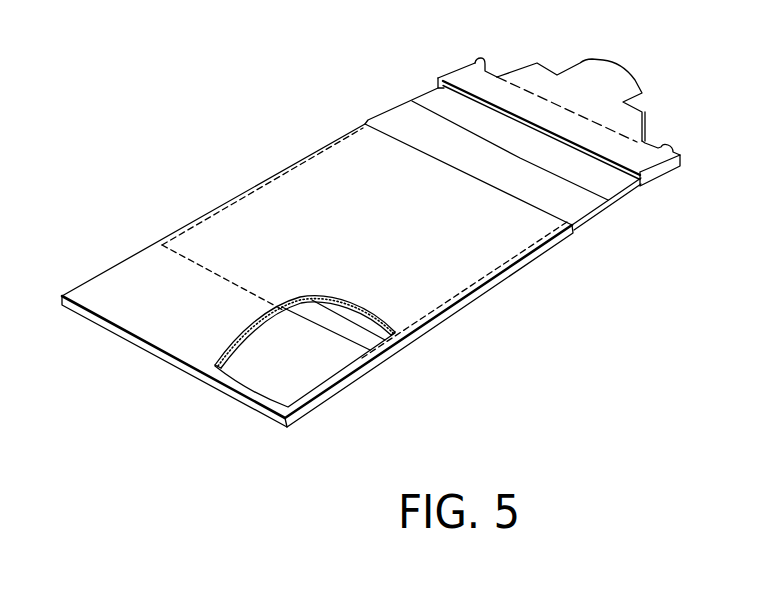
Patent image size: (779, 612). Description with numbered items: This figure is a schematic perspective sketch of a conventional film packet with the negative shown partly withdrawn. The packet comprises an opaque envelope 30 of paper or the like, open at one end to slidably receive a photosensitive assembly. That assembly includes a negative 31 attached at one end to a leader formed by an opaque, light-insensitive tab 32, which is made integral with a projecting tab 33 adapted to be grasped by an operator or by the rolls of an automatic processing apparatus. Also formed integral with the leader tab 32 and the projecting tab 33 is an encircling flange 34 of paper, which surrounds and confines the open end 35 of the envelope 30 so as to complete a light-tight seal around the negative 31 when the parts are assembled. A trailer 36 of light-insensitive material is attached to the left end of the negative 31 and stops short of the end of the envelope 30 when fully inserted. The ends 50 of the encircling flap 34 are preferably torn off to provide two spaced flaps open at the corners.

The opaque envelope 30 is at (168, 334).
The negative 31 is at (571, 206).
The leader tab 32 is at (606, 181).
The projecting tab 33 is at (619, 84).
The encircling flange 34 is at (555, 122).
The open end of the envelope 35 is at (444, 164).
The trailer 36 is at (341, 329).
The ends of the encircling flap 50 is at (471, 62).